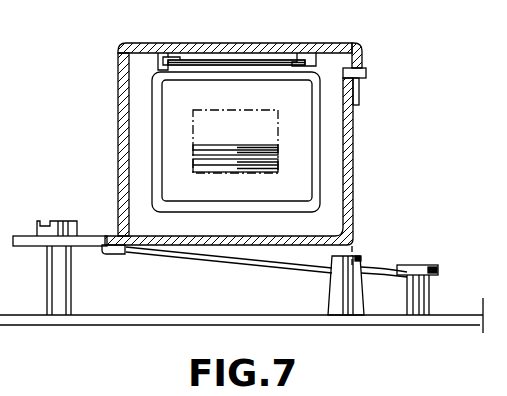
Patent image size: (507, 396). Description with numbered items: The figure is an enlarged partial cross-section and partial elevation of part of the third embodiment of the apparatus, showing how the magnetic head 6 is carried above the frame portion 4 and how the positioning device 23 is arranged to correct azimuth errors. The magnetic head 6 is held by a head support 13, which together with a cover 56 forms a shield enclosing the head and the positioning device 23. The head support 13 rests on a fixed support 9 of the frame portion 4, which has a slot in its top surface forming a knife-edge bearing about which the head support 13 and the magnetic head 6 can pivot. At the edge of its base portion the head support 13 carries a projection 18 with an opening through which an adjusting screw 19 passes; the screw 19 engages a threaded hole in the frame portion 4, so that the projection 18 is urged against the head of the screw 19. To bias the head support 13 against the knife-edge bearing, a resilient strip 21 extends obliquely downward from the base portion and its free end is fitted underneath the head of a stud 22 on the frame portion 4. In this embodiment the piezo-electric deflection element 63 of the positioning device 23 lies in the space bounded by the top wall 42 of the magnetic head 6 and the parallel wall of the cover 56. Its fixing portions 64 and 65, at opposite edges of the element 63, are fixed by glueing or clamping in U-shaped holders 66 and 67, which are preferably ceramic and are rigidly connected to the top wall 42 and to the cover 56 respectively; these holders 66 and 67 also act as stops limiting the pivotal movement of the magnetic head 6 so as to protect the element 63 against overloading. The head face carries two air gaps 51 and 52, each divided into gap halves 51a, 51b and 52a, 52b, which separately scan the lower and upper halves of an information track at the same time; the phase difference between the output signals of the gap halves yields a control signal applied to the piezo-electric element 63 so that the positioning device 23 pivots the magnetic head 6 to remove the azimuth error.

The frame portion 4 is at (463, 327).
The magnetic head 6 is at (150, 122).
The fixed support 9 is at (331, 287).
The head support 13 is at (356, 221).
The projection 18 is at (25, 247).
The adjusting screw 19 is at (59, 226).
The resilient strip 21 is at (263, 268).
The stud 22 is at (430, 288).
The positioning device 23 is at (228, 59).
The top wall 42 is at (243, 72).
The air gap 51 is at (233, 150).
The gap half 51a is at (258, 146).
The gap half 51b is at (280, 149).
The air gap 52 is at (233, 164).
The gap half 52a is at (276, 165).
The gap half 52b is at (243, 169).
The cover 56 is at (198, 43).
The piezo-electric deflection element 63 is at (259, 59).
The fixing portion 64 is at (173, 66).
The fixing portion 65 is at (303, 52).
The U-shaped holder 66 is at (163, 53).
The U-shaped holder 67 is at (342, 44).